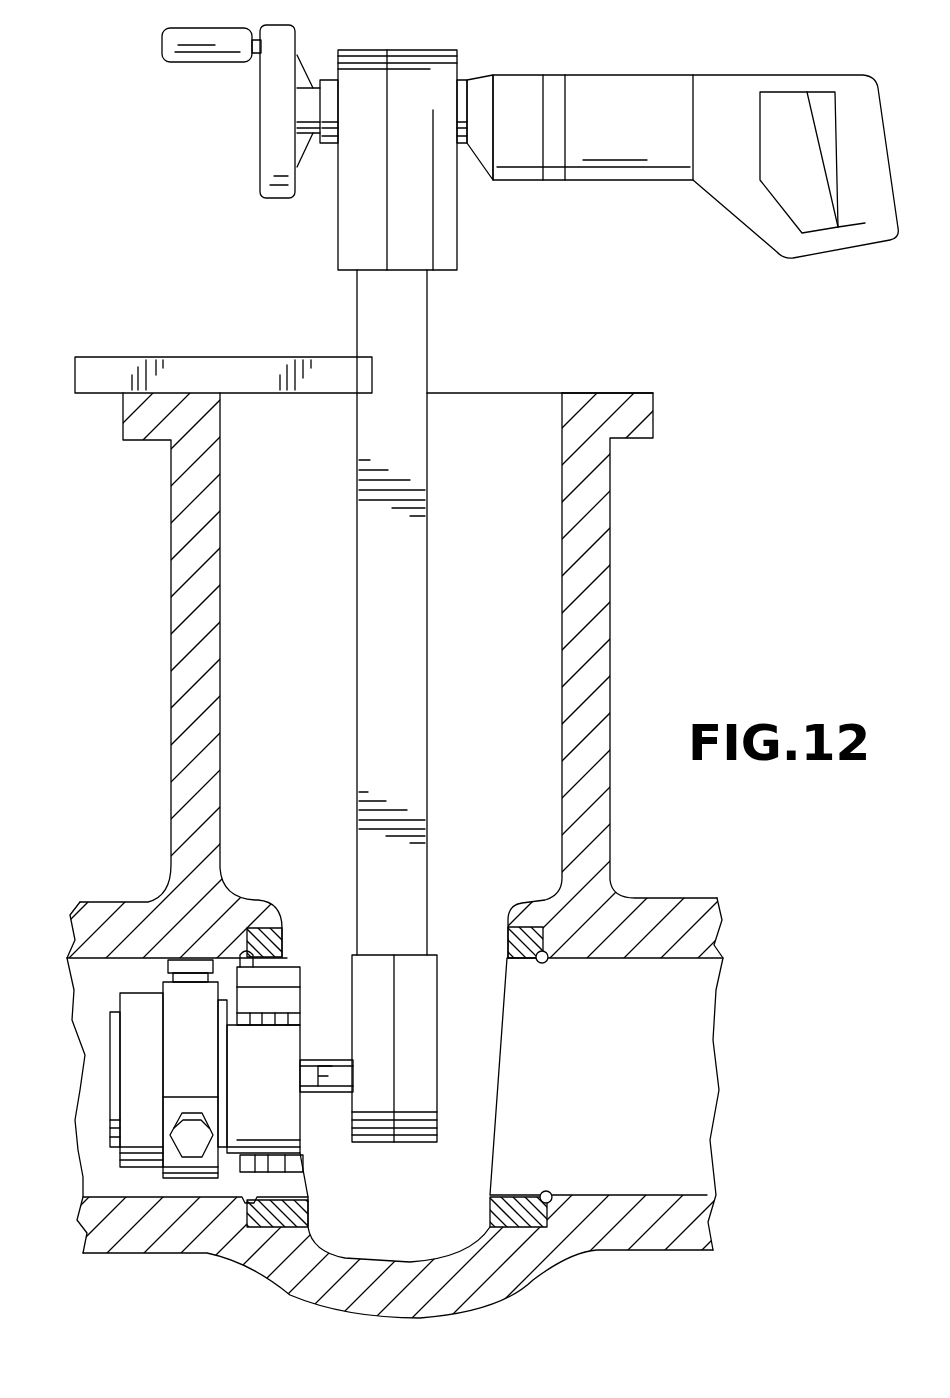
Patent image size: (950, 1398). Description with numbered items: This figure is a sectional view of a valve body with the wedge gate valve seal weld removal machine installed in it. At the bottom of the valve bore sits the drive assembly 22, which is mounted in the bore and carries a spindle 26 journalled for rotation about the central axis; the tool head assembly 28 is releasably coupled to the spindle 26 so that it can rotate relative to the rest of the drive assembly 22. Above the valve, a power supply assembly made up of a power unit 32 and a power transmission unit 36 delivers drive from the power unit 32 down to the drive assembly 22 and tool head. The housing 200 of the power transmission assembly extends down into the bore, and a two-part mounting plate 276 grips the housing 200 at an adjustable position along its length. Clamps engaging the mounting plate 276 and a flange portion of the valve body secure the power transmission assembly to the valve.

The drive assembly 22 is at (103, 1122).
The spindle 26 is at (225, 1122).
The tool head assembly 28 is at (303, 1116).
The power unit 32 is at (626, 73).
The power transmission unit 36 is at (452, 553).
The housing 200 is at (427, 672).
The mounting plate 276 is at (258, 357).